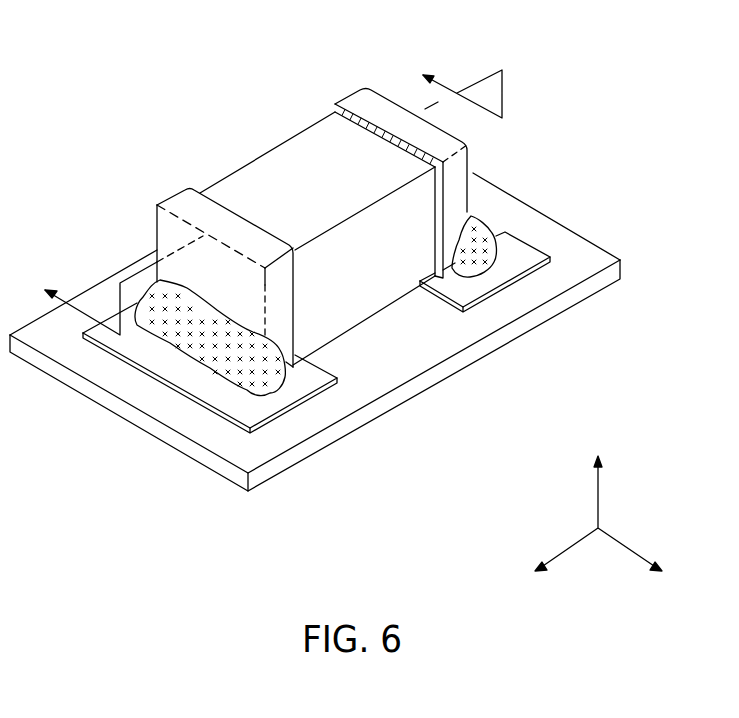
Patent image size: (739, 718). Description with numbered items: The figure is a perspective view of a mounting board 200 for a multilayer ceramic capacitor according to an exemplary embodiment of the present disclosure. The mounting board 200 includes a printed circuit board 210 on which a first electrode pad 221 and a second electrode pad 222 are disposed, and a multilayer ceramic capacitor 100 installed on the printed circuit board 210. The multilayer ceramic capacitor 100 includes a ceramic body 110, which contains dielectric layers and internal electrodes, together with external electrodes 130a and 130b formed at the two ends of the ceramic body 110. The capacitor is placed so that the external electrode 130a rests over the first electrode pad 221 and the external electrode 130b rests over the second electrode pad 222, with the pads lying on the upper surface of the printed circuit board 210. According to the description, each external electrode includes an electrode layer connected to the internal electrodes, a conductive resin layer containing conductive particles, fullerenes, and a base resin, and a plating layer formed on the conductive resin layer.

The mounting board 200 is at (113, 62).
The multilayer ceramic capacitor 100 is at (296, 203).
The ceramic body 110 is at (275, 169).
The external electrode 130a is at (180, 207).
The external electrode 130b is at (352, 108).
The printed circuit board 210 is at (420, 358).
The first electrode pad 221 is at (292, 390).
The second electrode pad 222 is at (503, 268).